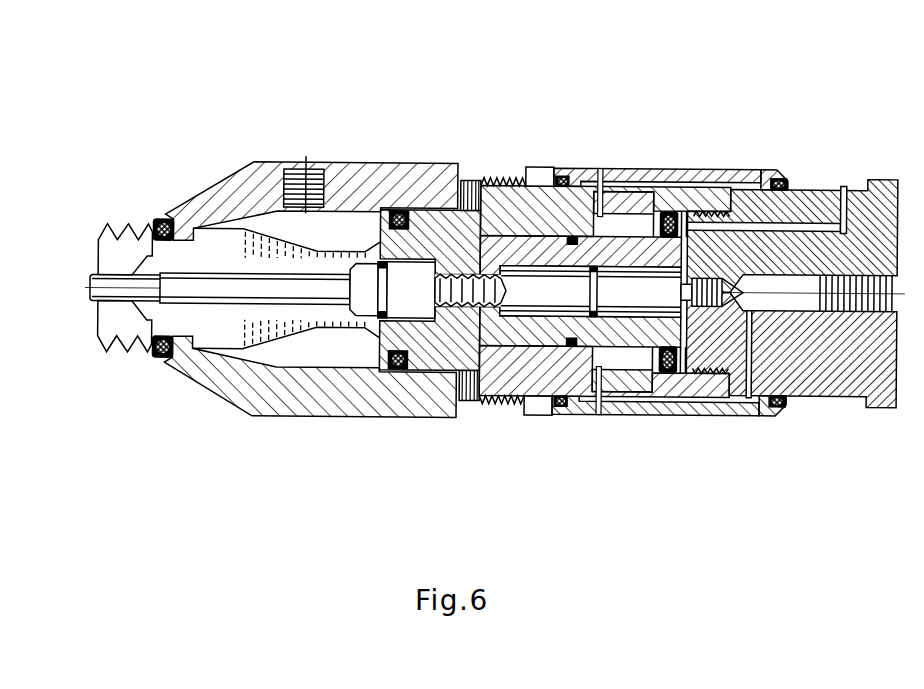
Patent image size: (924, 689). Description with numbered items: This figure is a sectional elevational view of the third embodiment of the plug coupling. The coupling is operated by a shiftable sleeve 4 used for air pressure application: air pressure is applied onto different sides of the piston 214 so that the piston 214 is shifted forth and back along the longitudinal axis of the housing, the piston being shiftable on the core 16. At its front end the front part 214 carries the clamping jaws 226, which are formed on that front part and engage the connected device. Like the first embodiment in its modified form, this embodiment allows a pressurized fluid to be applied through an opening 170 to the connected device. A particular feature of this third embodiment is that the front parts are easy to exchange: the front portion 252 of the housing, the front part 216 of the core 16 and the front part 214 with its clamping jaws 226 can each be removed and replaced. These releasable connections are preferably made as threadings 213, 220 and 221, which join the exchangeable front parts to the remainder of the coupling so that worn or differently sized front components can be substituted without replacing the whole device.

The clamping jaws 226 is at (130, 247).
The opening 170 is at (317, 166).
The threading 220 is at (448, 250).
The threading 221 is at (450, 338).
The threading 213 is at (507, 168).
The piston 214 is at (613, 252).
The shiftable sleeve 4 is at (708, 173).
The core 16 is at (633, 308).
The front part of the core 216 is at (208, 291).
The front portion of the housing 252 is at (313, 412).